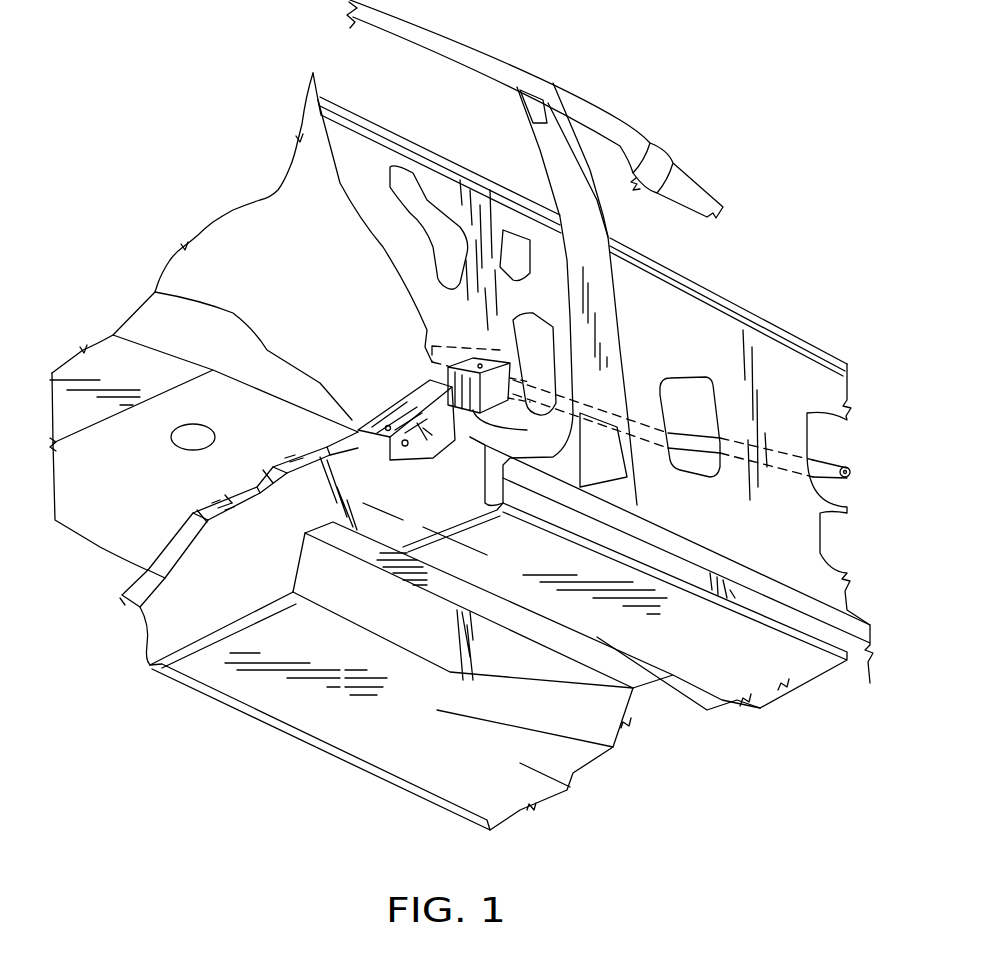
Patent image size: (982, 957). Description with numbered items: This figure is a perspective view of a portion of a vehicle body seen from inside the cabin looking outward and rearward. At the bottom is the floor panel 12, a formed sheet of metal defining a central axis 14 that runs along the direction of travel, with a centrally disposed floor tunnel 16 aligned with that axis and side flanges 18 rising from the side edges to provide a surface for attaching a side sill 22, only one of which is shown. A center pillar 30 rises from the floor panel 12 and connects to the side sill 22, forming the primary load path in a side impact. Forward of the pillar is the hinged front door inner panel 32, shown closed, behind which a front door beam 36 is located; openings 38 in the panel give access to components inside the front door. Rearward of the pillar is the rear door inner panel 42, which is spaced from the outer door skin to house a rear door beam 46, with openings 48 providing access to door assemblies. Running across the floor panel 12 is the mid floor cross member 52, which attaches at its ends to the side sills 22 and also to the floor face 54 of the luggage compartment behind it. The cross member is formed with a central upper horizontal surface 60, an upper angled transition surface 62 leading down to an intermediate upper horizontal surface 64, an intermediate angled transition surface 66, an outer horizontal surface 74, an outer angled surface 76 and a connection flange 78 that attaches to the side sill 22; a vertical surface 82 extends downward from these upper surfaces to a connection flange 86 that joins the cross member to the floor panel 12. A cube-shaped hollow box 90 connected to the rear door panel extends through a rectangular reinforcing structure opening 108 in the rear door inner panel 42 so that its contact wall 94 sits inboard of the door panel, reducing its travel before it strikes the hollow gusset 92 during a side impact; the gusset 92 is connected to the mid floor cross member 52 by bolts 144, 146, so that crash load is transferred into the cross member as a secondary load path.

The floor panel 12 is at (412, 760).
The central axis 14 is at (460, 547).
The floor tunnel 16 is at (680, 693).
The side flanges 18 is at (822, 647).
The side sill 22 is at (860, 663).
The center pillar 30 is at (563, 163).
The front door inner panel 32 is at (790, 360).
The front door beam 36 is at (822, 472).
The openings 38 is at (733, 320).
The rear door inner panel 42 is at (368, 147).
The rear door beam 46 is at (540, 390).
The openings 48 is at (443, 230).
The mid floor cross member 52 is at (138, 649).
The floor face 54 is at (83, 527).
The central upper horizontal surface 60 is at (293, 455).
The upper angled transition surface 62 is at (267, 480).
The intermediate upper horizontal surface 64 is at (202, 503).
The intermediate angled transition surface 66 is at (180, 537).
The outer horizontal surface 74 is at (143, 567).
The outer angled surface 76 is at (118, 587).
The connection flange 78 is at (120, 603).
The vertical surface 82 is at (262, 548).
The connection flange 86 is at (210, 645).
The box-shaped reinforcing structure 90 is at (430, 360).
The gusset 92 is at (401, 388).
The contact wall 94 is at (513, 428).
The reinforcing structure opening 108 is at (470, 340).
The bolt 144 is at (372, 408).
The bolt 146 is at (405, 447).